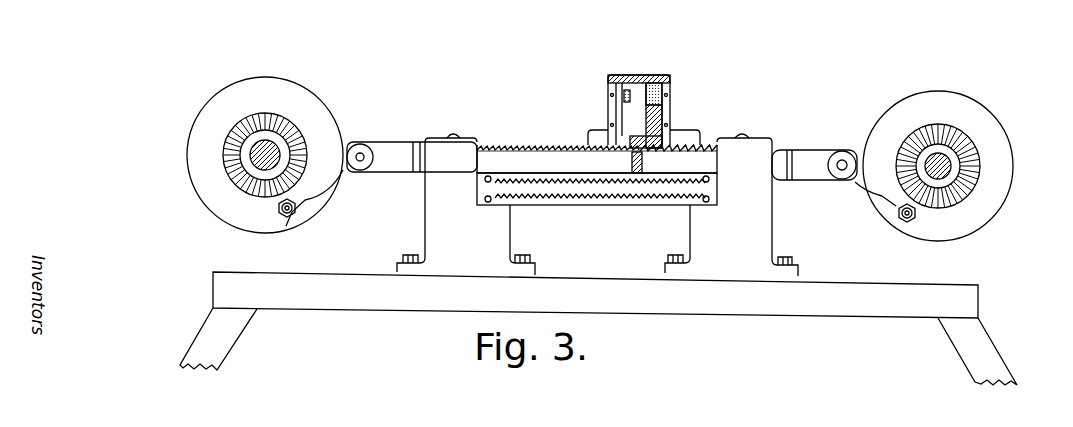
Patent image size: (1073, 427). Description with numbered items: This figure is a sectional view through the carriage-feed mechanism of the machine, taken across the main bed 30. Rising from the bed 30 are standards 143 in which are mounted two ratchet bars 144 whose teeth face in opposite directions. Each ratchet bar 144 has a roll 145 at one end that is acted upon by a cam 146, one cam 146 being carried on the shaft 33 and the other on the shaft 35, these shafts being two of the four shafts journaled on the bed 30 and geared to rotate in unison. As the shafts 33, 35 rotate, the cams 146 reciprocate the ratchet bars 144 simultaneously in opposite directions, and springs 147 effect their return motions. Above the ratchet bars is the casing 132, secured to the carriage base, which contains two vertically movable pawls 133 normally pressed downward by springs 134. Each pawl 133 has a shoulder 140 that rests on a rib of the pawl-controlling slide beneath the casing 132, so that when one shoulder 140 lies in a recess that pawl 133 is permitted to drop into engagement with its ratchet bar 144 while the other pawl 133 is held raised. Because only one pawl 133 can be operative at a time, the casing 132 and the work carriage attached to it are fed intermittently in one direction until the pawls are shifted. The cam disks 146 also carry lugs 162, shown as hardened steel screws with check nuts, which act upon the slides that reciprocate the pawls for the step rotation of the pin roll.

The bed 30 is at (849, 298).
The shaft 33 is at (942, 163).
The shaft 35 is at (270, 150).
The pawl casing 132 is at (675, 103).
The pawl 133 is at (620, 116).
The spring 134 is at (652, 75).
The shoulder 140 is at (606, 144).
The standard 143 is at (447, 228).
The ratchet bar 144 is at (498, 145).
The roll 145 is at (370, 142).
The cam 146 is at (338, 172).
The spring 147 is at (643, 198).
The lug 162 is at (288, 219).